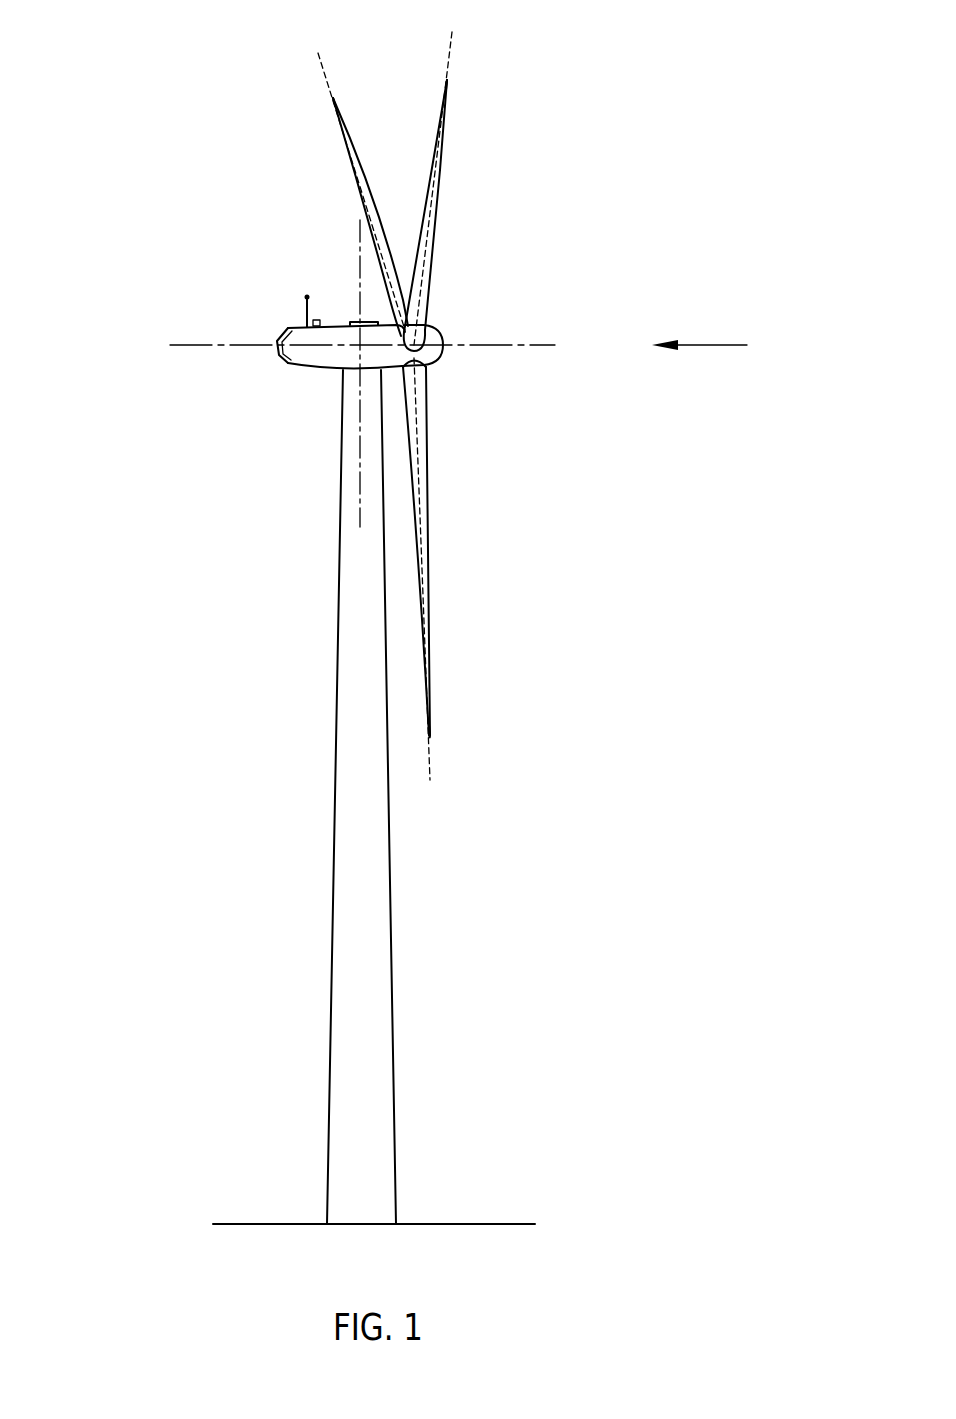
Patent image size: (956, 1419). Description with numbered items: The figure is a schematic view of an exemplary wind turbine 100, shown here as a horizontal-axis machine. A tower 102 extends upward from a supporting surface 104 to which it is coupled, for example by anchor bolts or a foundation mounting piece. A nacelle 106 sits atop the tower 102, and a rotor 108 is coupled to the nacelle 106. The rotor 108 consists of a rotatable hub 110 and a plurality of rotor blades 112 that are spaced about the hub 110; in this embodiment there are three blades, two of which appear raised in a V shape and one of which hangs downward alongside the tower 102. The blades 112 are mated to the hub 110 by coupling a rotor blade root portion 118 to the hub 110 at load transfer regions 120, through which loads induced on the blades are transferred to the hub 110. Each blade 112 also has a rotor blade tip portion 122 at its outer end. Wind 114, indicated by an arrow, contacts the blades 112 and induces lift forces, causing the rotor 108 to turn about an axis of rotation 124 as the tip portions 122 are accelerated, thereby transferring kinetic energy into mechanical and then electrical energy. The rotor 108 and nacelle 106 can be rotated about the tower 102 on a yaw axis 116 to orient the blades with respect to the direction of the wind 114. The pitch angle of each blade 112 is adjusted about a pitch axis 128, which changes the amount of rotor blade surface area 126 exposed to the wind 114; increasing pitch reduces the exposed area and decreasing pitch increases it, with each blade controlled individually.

The wind turbine 100 is at (152, 200).
The tower 102 is at (331, 982).
The supporting surface 104 is at (268, 1223).
The nacelle 106 is at (306, 370).
The rotor 108 is at (470, 231).
The rotatable hub 110 is at (440, 334).
The rotor blade 112 is at (438, 158).
The wind 114 is at (723, 345).
The yaw axis 116 is at (360, 242).
The rotor blade root portion 118 is at (422, 421).
The load transfer region 120 is at (422, 316).
The rotor blade tip portion 122 is at (452, 33).
The axis of rotation 124 is at (500, 346).
The rotor blade surface area 126 is at (432, 286).
The pitch axis 128 is at (318, 53).